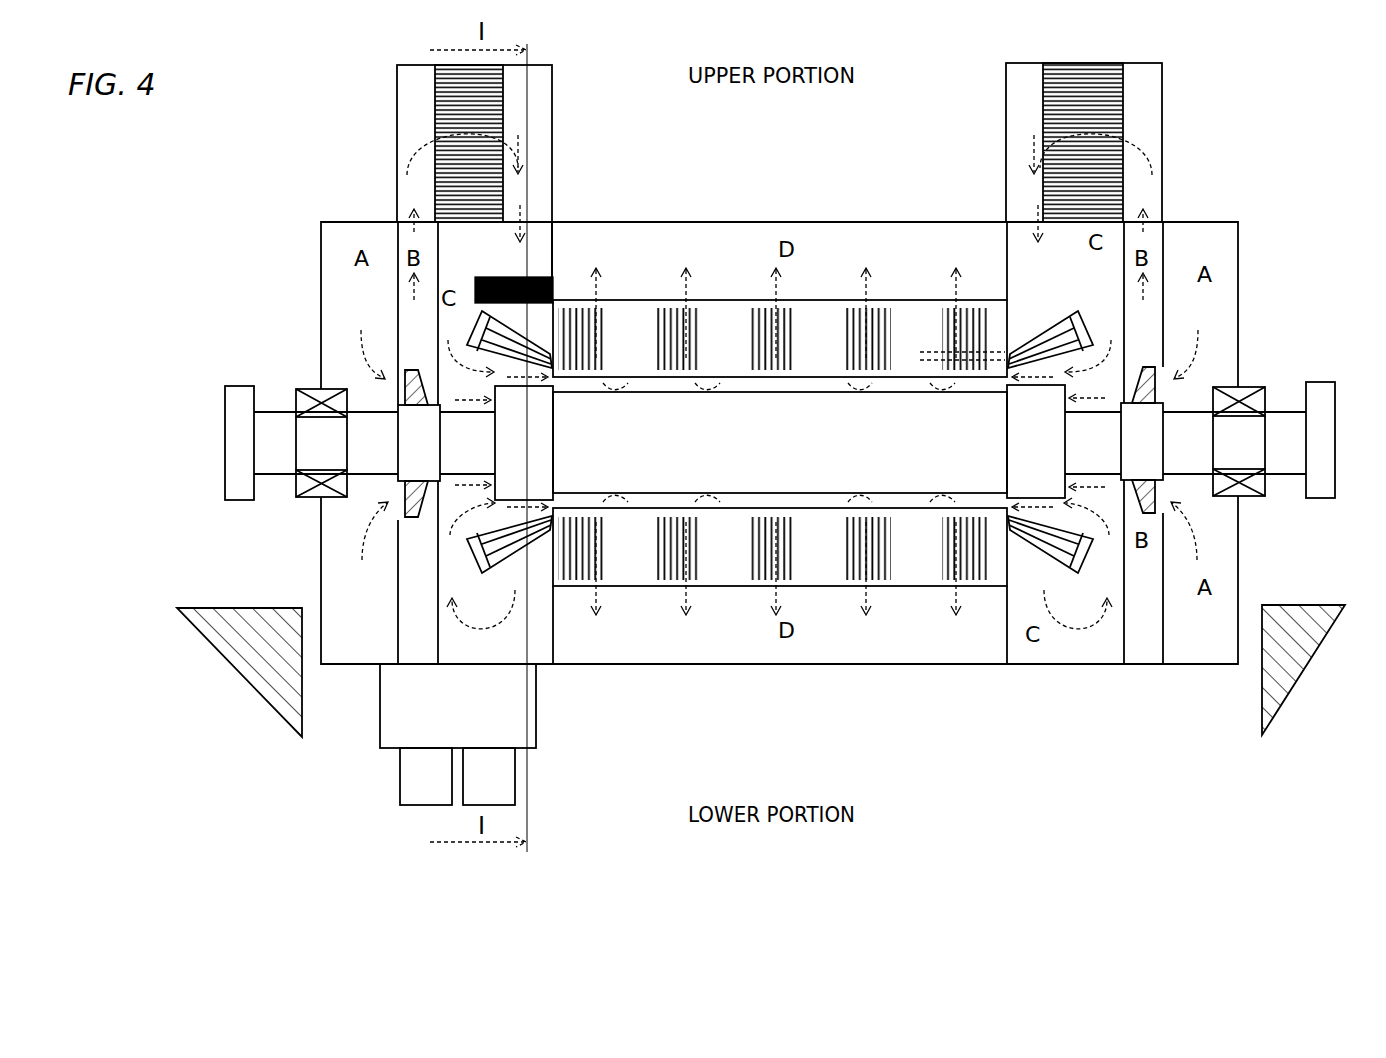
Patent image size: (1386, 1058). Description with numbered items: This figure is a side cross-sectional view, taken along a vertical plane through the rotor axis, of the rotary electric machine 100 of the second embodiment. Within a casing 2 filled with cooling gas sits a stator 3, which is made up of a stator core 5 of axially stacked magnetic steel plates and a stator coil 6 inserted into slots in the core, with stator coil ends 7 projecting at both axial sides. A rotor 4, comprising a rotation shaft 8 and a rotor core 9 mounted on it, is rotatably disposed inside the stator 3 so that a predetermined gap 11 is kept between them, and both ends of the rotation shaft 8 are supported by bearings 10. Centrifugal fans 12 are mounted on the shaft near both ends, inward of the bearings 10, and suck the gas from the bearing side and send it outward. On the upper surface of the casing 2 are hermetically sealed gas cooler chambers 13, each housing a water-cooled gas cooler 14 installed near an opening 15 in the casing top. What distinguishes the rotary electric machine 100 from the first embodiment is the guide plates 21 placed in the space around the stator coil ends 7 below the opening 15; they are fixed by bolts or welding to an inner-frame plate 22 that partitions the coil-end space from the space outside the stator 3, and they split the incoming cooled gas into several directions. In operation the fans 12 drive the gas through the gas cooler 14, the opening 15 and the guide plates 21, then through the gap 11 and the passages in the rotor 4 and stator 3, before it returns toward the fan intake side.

The rotary electric machine 100 is at (1247, 126).
The casing 2 is at (734, 300).
The stator 3 is at (812, 318).
The rotor 4 is at (825, 470).
The stator core 5 is at (780, 300).
The stator coil 6 is at (933, 350).
The stator coil end 7 is at (487, 576).
The rotation shaft 8 is at (1112, 460).
The rotor core 9 is at (905, 500).
The bearing 10 is at (310, 483).
The gap 11 is at (727, 505).
The fan 12 is at (413, 370).
The gas cooler chamber 13 is at (408, 117).
The gas cooler 14 is at (440, 92).
The opening 15 is at (530, 242).
The guide plate 21 is at (543, 277).
The inner-frame plate 22 is at (562, 300).